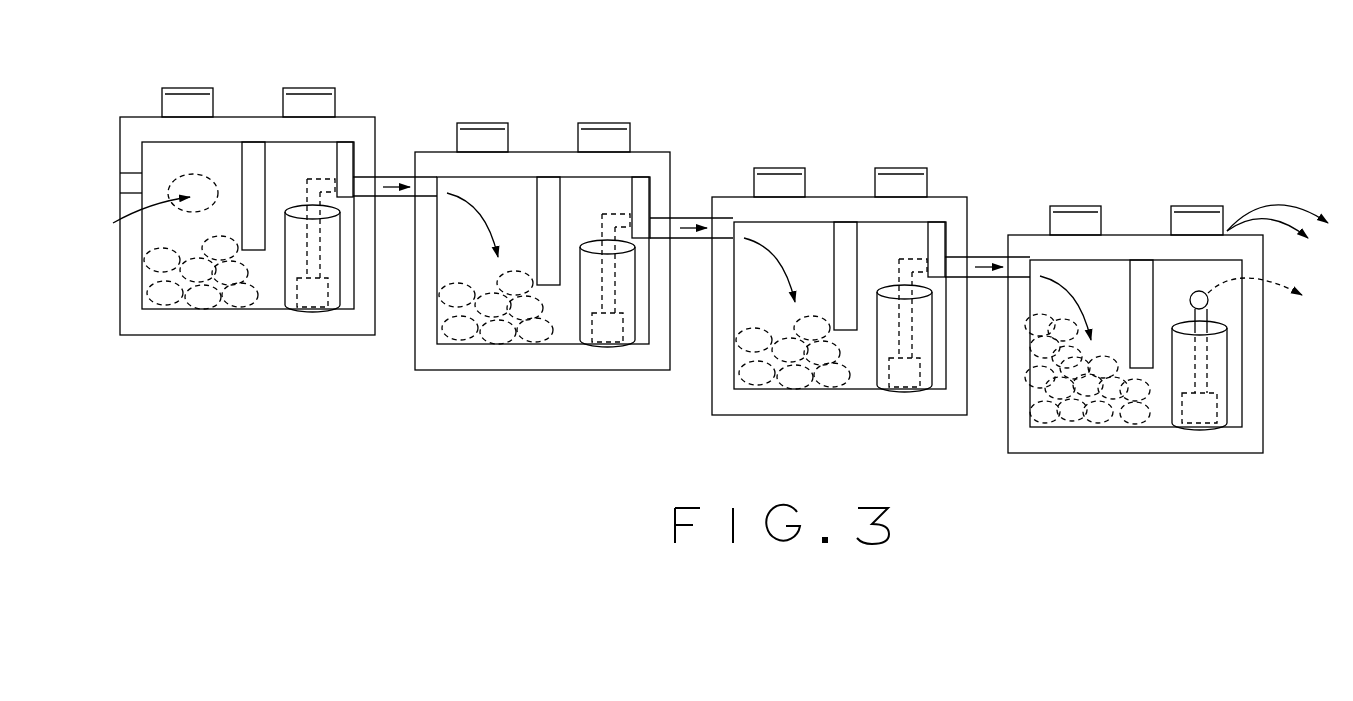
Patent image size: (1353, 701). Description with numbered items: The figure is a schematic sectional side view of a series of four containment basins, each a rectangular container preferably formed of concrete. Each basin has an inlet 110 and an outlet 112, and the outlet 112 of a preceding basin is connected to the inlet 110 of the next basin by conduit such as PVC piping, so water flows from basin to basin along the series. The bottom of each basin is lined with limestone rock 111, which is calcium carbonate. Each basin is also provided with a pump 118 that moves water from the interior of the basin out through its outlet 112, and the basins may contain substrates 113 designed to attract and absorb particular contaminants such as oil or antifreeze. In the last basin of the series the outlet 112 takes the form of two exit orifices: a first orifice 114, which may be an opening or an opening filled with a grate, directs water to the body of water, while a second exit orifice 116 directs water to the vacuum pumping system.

The inlet 110 is at (130, 182).
The limestone rock 111 is at (203, 283).
The outlet 112 is at (365, 185).
The substrate 113 is at (347, 168).
The first orifice 114 is at (1227, 231).
The second exit orifice 116 is at (1208, 303).
The pump 118 is at (307, 307).